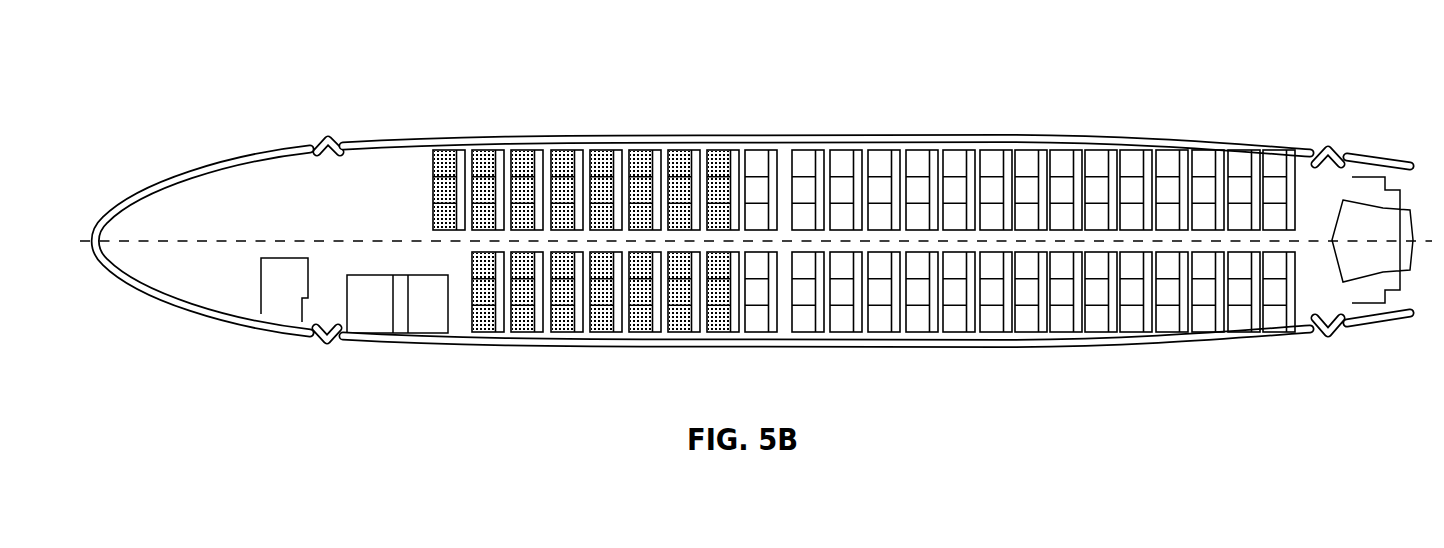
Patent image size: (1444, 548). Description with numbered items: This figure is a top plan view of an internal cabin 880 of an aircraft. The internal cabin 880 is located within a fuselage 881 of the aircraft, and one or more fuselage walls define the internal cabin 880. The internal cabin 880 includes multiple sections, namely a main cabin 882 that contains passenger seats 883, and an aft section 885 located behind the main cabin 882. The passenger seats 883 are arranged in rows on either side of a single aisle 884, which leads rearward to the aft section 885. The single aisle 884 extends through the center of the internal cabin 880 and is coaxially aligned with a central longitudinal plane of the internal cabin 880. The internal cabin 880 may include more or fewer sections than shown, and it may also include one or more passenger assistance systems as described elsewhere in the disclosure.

The internal cabin 880 is at (345, 82).
The fuselage 881 is at (550, 142).
The main cabin 882 is at (489, 165).
The passenger seats 883 is at (758, 170).
The single aisle 884 is at (883, 237).
The aft section 885 is at (1313, 173).